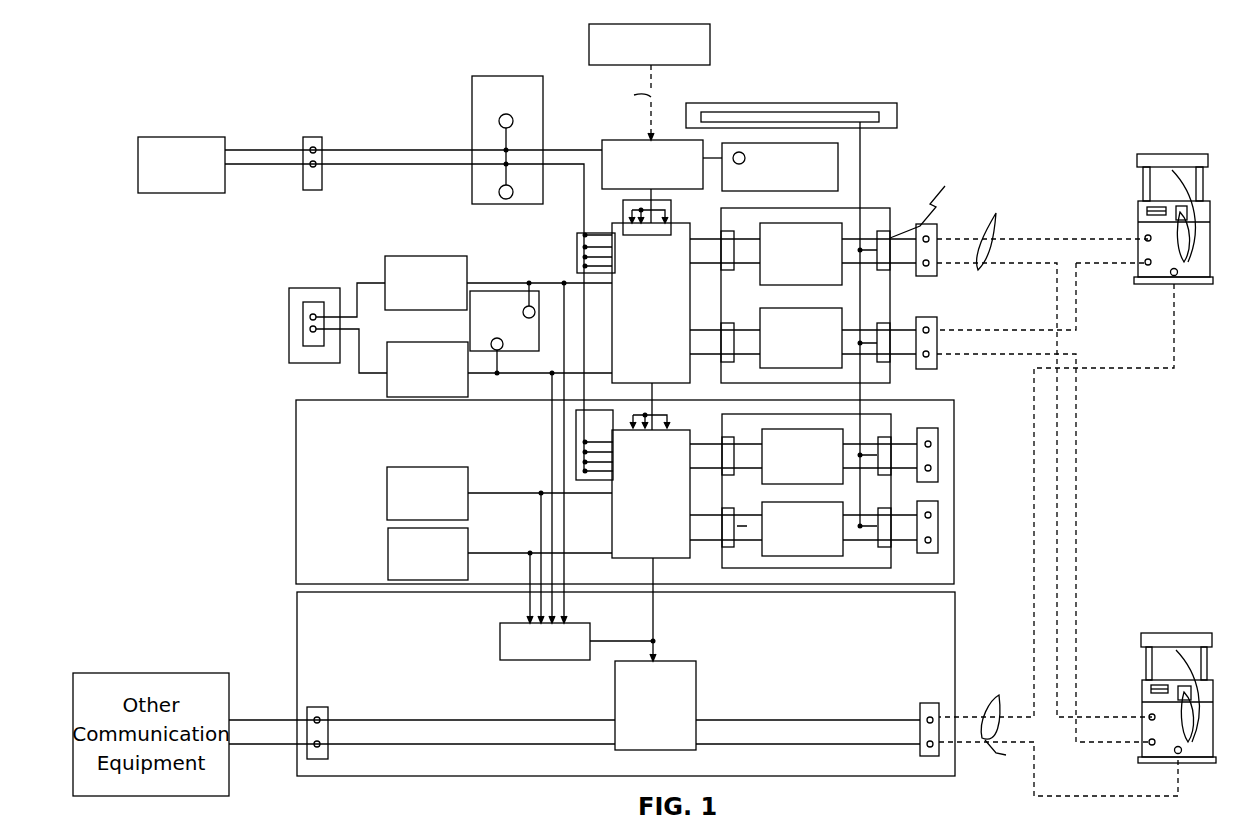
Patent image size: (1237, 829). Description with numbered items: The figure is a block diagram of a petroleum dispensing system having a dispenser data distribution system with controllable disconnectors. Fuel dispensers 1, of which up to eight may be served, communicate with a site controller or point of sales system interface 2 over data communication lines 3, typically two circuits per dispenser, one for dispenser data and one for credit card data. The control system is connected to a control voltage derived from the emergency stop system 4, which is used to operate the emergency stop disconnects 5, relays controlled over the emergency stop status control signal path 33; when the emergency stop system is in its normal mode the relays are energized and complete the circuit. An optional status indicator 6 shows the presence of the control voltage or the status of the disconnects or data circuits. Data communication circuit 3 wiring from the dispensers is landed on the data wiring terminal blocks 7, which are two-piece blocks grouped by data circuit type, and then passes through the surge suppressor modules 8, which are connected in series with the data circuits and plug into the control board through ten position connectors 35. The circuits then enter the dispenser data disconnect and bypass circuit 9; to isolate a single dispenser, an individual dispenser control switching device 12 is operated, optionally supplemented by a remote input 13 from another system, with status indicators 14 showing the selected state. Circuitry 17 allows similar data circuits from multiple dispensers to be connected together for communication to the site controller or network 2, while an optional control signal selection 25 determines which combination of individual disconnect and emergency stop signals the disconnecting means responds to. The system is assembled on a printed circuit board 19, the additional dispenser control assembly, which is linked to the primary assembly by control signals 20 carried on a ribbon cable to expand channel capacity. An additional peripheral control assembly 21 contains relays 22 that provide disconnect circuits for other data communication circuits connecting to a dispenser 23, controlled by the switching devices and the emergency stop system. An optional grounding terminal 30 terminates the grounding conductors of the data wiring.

The fuel dispenser 1 is at (1135, 236).
The site controller or point of sales system interface 2 is at (225, 140).
The data communication lines 3 is at (988, 232).
The emergency stop system 4 is at (705, 45).
The emergency stop disconnects 5 is at (638, 142).
The status indicator 6 is at (470, 128).
The data wiring terminal blocks 7 is at (924, 237).
The surge suppressor modules 8 is at (806, 388).
The dispenser data disconnect and bypass circuit 9 is at (651, 390).
The individual dispenser control switching device 12 is at (403, 352).
The remote input 13 is at (305, 295).
The status indicators 14 is at (504, 328).
The circuitry for connecting similar data circuits together 17 is at (661, 204).
The additional dispenser control assembly 19 is at (625, 492).
The control signals 20 is at (623, 445).
The additional peripheral control assembly 21 is at (626, 684).
The relays for communication circuits 22 is at (655, 705).
The dispenser 23 is at (1000, 753).
The control signal selection 25 is at (506, 650).
The grounding terminal 30 is at (791, 98).
The emergency stop status control signal path 33 is at (634, 95).
The ten position connectors 35 is at (921, 200).